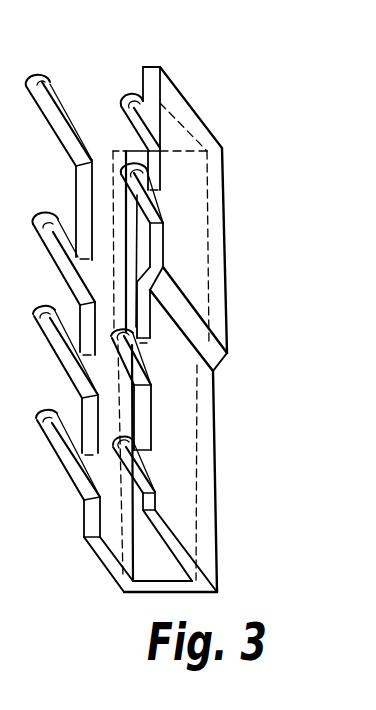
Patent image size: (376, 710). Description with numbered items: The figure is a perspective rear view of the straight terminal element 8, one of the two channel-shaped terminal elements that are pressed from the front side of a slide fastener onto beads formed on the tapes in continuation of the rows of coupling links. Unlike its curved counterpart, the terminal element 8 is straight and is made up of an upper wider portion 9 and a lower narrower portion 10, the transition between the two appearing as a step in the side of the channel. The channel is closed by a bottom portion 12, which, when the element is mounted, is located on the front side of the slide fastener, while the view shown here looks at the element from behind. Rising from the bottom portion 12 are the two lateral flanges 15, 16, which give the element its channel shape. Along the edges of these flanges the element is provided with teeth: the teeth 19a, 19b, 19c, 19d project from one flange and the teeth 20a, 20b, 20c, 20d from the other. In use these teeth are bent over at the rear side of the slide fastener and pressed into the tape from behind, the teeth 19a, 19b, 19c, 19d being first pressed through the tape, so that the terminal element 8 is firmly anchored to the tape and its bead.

The terminal element 8 is at (231, 354).
The upper wider portion 9 is at (229, 232).
The lower narrower portion 10 is at (222, 496).
The bottom portion 12 is at (168, 568).
The lateral flange 15 is at (108, 418).
The lateral flange 16 is at (200, 292).
The tooth 19a is at (53, 93).
The tooth 19b is at (53, 226).
The tooth 19c is at (59, 317).
The tooth 19d is at (56, 422).
The tooth 20a is at (151, 120).
The tooth 20b is at (166, 185).
The tooth 20c is at (128, 335).
The tooth 20d is at (143, 460).